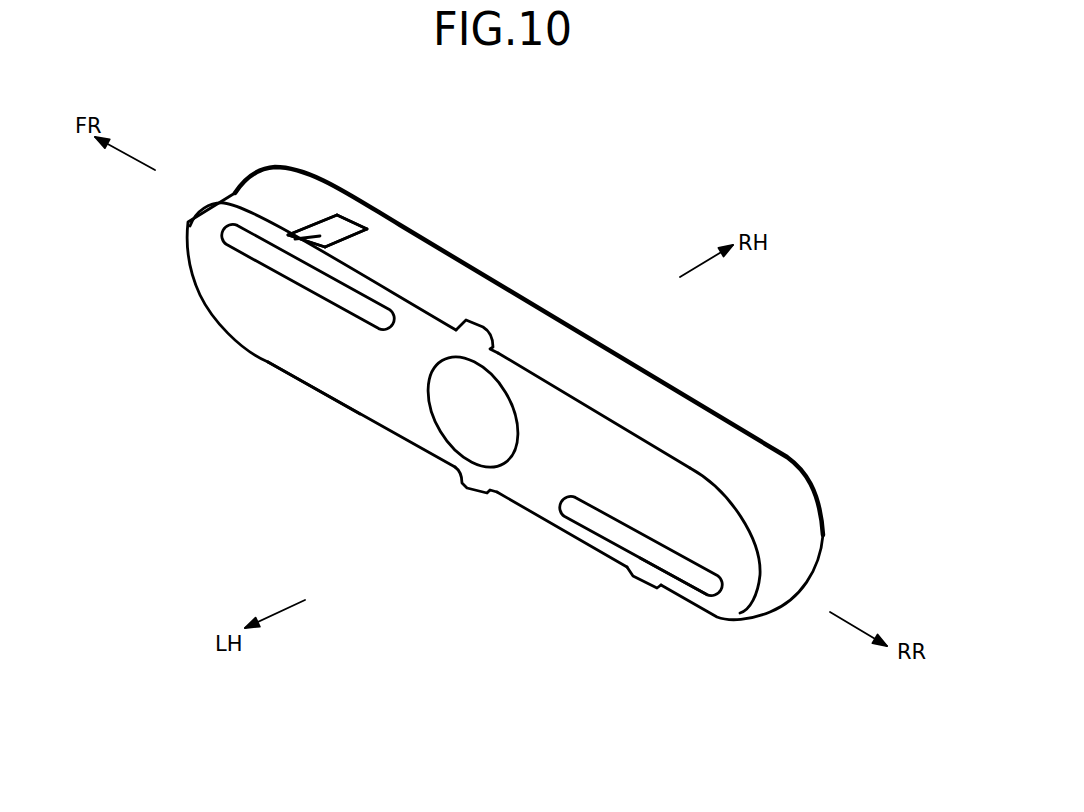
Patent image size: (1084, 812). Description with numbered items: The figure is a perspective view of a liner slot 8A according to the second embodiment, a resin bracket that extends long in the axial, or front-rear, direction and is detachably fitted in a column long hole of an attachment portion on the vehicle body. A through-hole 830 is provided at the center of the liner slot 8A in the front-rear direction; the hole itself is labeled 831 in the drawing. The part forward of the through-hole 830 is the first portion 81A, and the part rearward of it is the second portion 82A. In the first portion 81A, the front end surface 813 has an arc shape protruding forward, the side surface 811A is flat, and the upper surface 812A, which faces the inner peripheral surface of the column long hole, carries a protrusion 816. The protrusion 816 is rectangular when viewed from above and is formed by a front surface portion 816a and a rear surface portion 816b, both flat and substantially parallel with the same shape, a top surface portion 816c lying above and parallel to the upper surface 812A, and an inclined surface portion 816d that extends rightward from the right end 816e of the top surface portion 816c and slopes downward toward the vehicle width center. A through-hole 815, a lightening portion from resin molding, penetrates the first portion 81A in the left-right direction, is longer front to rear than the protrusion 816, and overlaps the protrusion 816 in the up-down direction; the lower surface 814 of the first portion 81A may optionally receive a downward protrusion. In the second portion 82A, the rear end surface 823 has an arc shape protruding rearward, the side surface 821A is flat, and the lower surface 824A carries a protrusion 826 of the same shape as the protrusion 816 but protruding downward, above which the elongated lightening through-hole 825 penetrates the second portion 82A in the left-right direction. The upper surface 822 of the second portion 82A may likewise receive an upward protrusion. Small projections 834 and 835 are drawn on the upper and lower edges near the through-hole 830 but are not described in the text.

The liner slot 8A is at (487, 394).
The upper surface 812A is at (522, 399).
The front end surface 813 is at (188, 222).
The lower surface 814 is at (308, 390).
The through-hole 815 is at (258, 250).
The protrusion 816 is at (291, 289).
The front surface portion 816a is at (310, 226).
The rear surface portion 816b is at (347, 257).
The top surface portion 816c is at (285, 247).
The inclined surface portion 816d is at (354, 220).
The right end 816e is at (345, 218).
The first portion 81A is at (271, 265).
The side surface 811A is at (313, 357).
The side surface 821A is at (703, 523).
The upper surface 822 is at (645, 393).
The rear end surface 823 is at (782, 563).
The lower surface 824A is at (585, 547).
The through-hole 825 is at (685, 568).
The protrusion 826 is at (642, 580).
The second portion 82A is at (673, 526).
The through-hole 830 is at (455, 459).
The through hole 831 is at (460, 407).
The upper projection 834 is at (483, 325).
The lower projection 835 is at (477, 488).